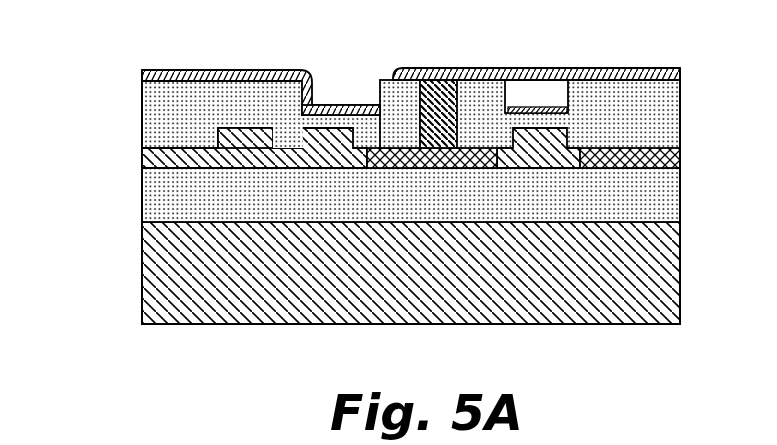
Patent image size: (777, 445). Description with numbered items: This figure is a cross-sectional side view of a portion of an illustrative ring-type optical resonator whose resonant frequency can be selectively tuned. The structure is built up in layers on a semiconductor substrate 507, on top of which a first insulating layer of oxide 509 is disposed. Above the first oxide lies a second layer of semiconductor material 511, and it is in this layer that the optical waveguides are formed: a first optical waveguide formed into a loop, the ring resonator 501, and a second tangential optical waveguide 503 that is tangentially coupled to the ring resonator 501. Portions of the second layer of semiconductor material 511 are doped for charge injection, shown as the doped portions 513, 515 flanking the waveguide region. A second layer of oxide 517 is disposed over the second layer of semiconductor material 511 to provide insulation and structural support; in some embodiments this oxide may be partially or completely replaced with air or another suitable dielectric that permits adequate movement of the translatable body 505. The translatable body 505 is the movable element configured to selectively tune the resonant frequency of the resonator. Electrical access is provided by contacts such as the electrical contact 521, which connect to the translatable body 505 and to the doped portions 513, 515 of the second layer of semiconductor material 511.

The ring resonator 501 is at (312, 121).
The tangential optical waveguide 503 is at (246, 127).
The translatable body 505 is at (350, 107).
The semiconductor substrate 507 is at (155, 278).
The first insulating layer of oxide 509 is at (150, 202).
The second layer of semiconductor material 511 is at (148, 160).
The doped portion 513 is at (442, 150).
The doped portion 515 is at (630, 150).
The second layer of oxide 517 is at (150, 113).
The electrical contact 521 is at (527, 72).